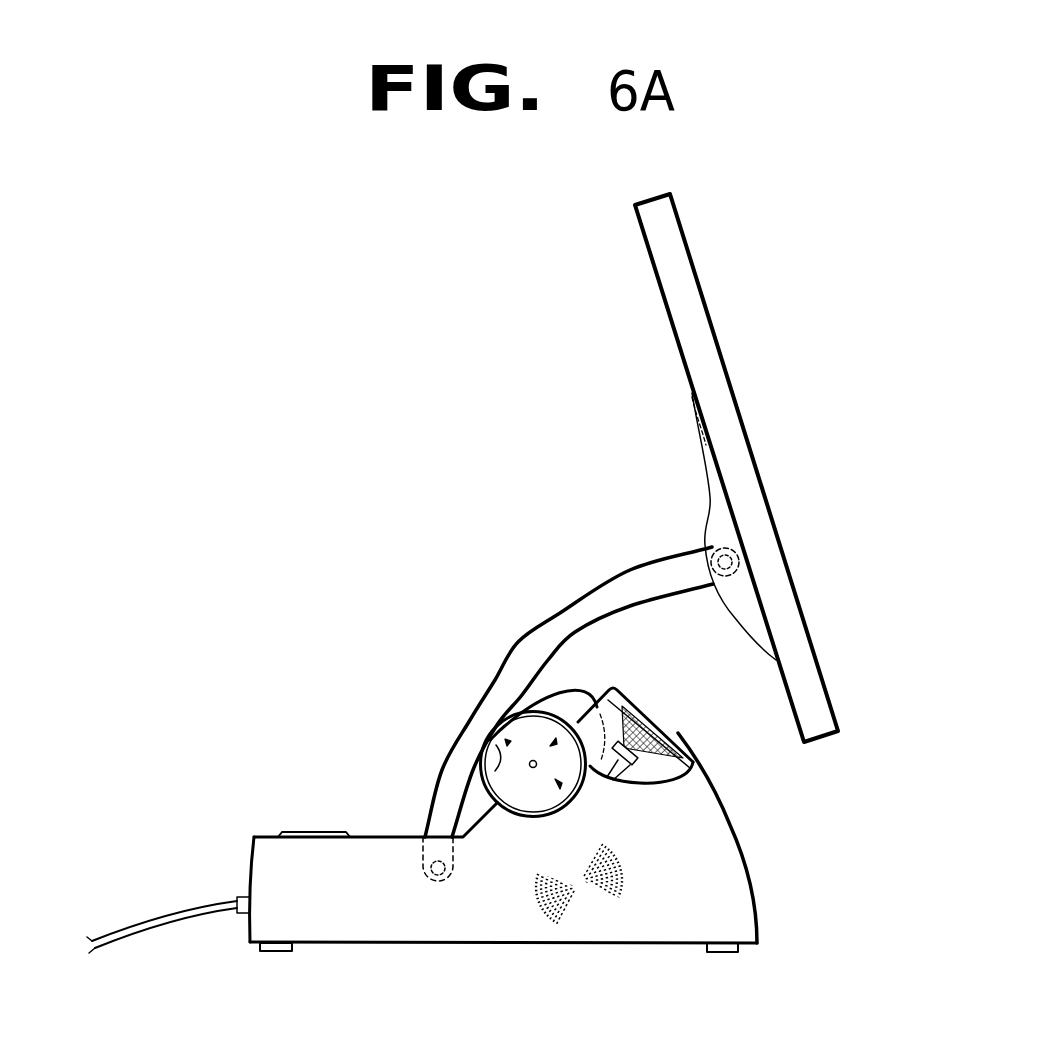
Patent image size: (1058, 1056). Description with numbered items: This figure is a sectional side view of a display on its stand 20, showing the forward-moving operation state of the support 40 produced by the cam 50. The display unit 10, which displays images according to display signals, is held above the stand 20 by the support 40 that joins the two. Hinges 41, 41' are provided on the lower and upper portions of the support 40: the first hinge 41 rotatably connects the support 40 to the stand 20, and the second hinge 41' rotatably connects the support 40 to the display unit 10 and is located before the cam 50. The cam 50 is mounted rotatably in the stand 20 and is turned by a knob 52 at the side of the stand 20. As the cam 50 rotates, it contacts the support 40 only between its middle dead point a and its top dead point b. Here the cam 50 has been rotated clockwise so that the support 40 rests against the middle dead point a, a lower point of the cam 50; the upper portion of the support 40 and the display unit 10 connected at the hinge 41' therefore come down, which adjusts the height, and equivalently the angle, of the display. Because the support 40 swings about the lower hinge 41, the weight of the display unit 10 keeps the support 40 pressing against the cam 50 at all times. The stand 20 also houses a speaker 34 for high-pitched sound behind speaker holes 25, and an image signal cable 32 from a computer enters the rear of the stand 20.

The display unit 10 is at (712, 368).
The stand 20 is at (720, 842).
The speaker holes 25 is at (563, 910).
The image signal cable 32 is at (190, 917).
The speaker 34 is at (662, 780).
The support 40 is at (492, 697).
The hinge 41 is at (436, 946).
The hinge 41' is at (809, 504).
The cam 50 is at (556, 703).
The knob 52 is at (523, 800).
The middle dead point a is at (488, 777).
The top dead point b is at (600, 703).